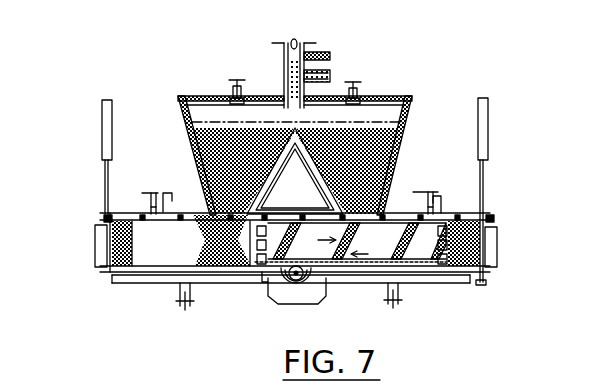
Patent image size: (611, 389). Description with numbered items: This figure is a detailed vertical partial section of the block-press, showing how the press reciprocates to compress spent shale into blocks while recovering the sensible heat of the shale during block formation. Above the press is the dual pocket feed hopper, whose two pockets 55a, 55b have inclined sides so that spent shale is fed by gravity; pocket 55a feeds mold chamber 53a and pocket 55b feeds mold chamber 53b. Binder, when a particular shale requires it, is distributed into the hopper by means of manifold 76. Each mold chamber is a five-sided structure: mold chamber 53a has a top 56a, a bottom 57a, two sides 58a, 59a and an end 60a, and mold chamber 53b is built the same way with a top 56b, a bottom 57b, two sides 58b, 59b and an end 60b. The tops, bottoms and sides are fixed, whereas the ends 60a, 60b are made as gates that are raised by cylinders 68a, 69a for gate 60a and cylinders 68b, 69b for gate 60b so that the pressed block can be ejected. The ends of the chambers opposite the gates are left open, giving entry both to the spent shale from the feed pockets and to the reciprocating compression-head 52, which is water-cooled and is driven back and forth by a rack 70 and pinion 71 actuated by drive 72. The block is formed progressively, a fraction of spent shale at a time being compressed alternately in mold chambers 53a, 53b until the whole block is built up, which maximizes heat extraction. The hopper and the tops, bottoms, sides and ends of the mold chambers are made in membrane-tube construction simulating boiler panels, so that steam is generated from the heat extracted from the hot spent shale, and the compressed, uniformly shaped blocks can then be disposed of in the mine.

The reciprocating compression-head 52 is at (286, 250).
The mold chamber 53a is at (178, 255).
The mold chamber 53b is at (484, 285).
The pocket 55a is at (186, 157).
The pocket 55b is at (405, 143).
The top 56a is at (170, 211).
The top 56b is at (442, 200).
The bottom 57a is at (160, 274).
The bottom 57b is at (420, 276).
The side 58a is at (145, 190).
The side 59a is at (138, 213).
The side 58b is at (434, 185).
The side 59b is at (420, 213).
The end 60a is at (94, 241).
The end 60b is at (499, 240).
The cylinder 68a is at (87, 140).
The cylinder 69a is at (116, 68).
The cylinder 68b is at (520, 176).
The cylinder 69b is at (484, 110).
The rack 70 is at (342, 276).
The pinion 71 is at (314, 290).
The drive 72 is at (286, 298).
The manifold 76 is at (238, 84).